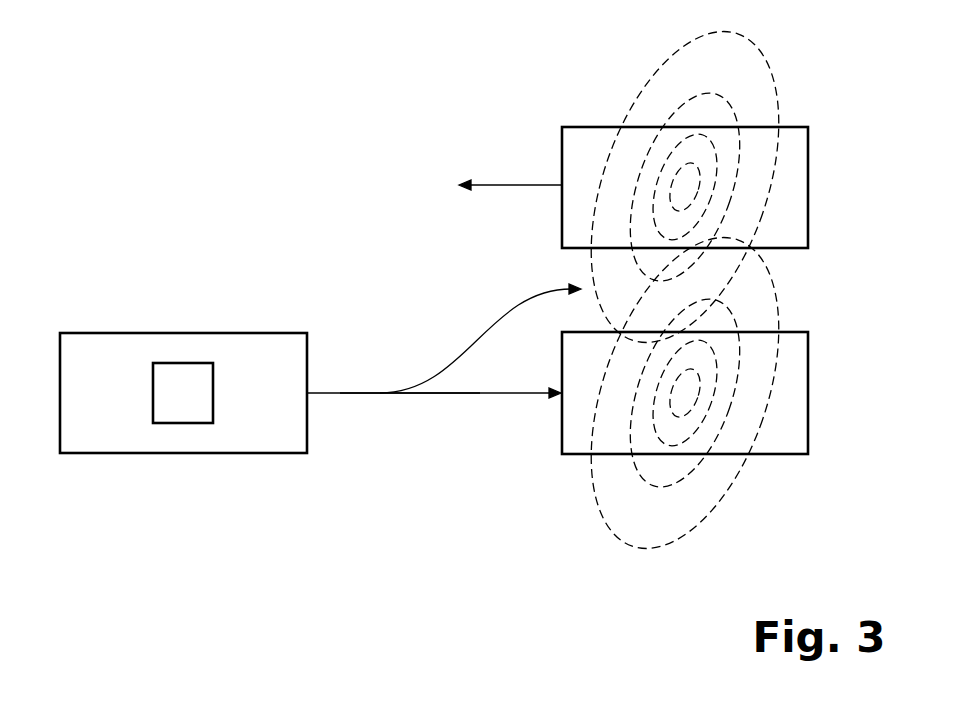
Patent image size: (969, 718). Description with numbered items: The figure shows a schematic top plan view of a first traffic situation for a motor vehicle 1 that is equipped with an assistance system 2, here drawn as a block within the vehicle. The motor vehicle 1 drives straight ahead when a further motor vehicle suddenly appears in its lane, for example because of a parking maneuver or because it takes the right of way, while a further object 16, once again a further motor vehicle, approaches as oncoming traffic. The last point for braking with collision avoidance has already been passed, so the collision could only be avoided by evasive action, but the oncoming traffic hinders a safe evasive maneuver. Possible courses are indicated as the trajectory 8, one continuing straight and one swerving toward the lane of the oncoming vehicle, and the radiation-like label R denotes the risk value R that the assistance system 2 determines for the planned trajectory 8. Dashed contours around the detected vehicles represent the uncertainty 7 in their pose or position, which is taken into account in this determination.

The motor vehicle 1 is at (90, 332).
The assistance system 2 is at (196, 363).
The further object 16 is at (588, 127).
The trajectory 8 is at (512, 307).
The risk value R is at (410, 426).
The uncertainty 7 is at (764, 84).